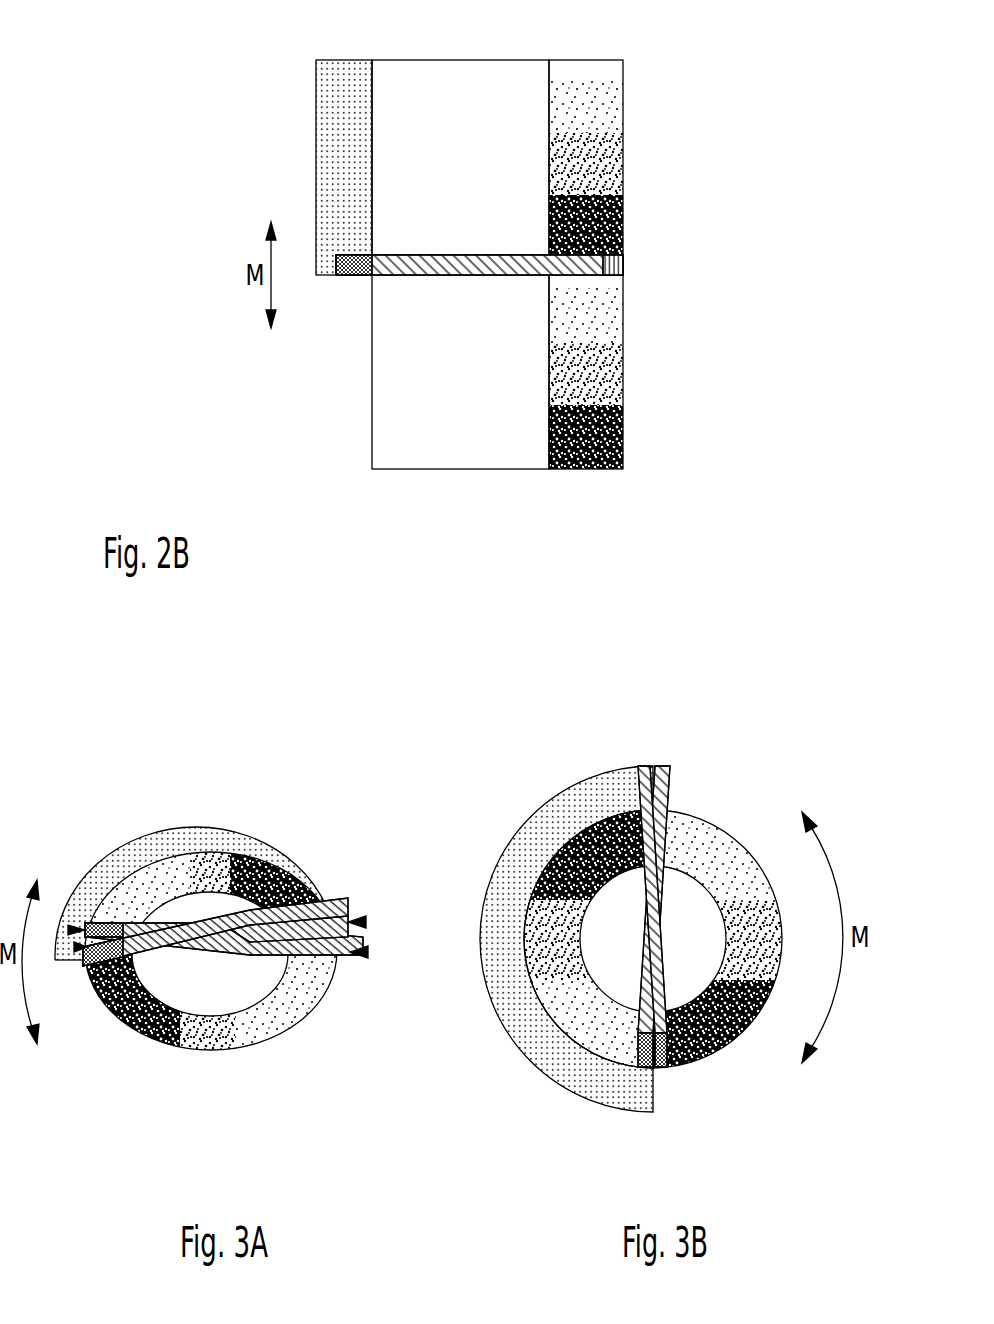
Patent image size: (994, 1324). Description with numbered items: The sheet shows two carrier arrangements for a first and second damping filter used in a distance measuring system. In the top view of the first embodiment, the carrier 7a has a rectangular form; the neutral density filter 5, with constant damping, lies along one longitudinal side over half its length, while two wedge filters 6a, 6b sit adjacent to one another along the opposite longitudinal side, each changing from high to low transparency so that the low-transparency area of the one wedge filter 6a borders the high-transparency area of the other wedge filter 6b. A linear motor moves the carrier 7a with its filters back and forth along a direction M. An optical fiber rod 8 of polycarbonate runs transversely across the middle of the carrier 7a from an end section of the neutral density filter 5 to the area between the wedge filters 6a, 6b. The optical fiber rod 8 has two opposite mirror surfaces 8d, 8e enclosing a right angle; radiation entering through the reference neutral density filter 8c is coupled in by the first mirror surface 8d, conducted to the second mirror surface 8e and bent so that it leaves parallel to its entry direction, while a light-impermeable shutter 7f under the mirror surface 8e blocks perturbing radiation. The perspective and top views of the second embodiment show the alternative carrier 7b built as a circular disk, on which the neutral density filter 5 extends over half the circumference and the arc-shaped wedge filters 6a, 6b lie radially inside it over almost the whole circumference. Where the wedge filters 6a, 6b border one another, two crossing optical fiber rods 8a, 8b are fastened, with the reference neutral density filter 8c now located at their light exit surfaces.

In FIG. 2B, the neutral density filter 5 is at (330, 115).
In FIG. 3A, the neutral density filter 5 is at (192, 835).
In FIG. 3B, the neutral density filter 5 is at (537, 1045).
In FIG. 2B, the wedge filter 6a is at (618, 165).
In FIG. 3A, the wedge filter 6a is at (210, 1035).
In FIG. 3B, the wedge filter 6a is at (783, 935).
In FIG. 2B, the wedge filter 6b is at (618, 395).
In FIG. 3A, the wedge filter 6b is at (245, 865).
In FIG. 3B, the wedge filter 6b is at (560, 838).
In FIG. 2B, the carrier 7a is at (486, 72).
In FIG. 3A, the carrier 7b is at (240, 990).
In FIG. 3B, the carrier 7b is at (705, 915).
In FIG. 2B, the shutter 7f is at (627, 265).
In FIG. 2B, the optical fiber rod 8 is at (585, 262).
In FIG. 3A, the optical fiber rod 8a is at (336, 898).
In FIG. 3B, the optical fiber rod 8a is at (643, 766).
In FIG. 3A, the optical fiber rod 8b is at (340, 942).
In FIG. 3B, the optical fiber rod 8b is at (660, 766).
In FIG. 2B, the reference neutral density filter 8c is at (352, 268).
In FIG. 3A, the reference neutral density filter 8c is at (92, 966).
In FIG. 3B, the reference neutral density filter 8c is at (664, 1068).
In FIG. 3A, the first mirror surface 8d is at (66, 923).
In FIG. 3A, the second mirror surface 8e is at (368, 952).